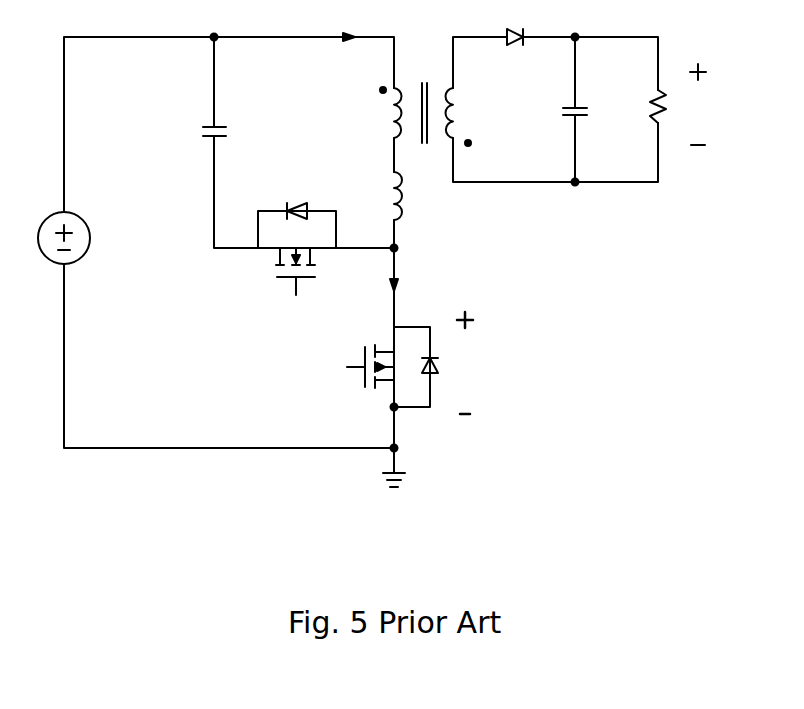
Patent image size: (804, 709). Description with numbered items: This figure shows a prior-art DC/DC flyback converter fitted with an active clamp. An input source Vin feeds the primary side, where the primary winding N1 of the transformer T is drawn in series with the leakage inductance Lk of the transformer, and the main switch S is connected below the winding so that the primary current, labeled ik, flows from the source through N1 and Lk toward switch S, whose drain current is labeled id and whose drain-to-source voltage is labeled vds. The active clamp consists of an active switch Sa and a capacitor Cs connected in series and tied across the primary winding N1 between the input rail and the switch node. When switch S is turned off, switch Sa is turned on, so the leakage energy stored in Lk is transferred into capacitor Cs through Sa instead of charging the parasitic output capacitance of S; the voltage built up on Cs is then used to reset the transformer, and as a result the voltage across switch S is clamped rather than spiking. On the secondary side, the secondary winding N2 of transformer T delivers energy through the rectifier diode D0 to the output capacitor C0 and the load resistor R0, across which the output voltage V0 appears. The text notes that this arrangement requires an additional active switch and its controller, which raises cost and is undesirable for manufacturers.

The primary current ik is at (363, 20).
The input voltage source Vin is at (96, 238).
The capacitor Cs is at (298, 142).
The active switch Sa is at (287, 252).
The drain current id is at (413, 286).
The primary winding N1 is at (370, 114).
The transformer T is at (423, 94).
The transformer secondary winding N2 is at (478, 117).
The leakage inductance Lk is at (377, 193).
The output rectifier diode D0 is at (516, 22).
The output capacitor C0 is at (559, 109).
The load resistor R0 is at (637, 122).
The output voltage V0 is at (703, 104).
The switch S is at (392, 376).
The drain-source voltage vds is at (477, 363).